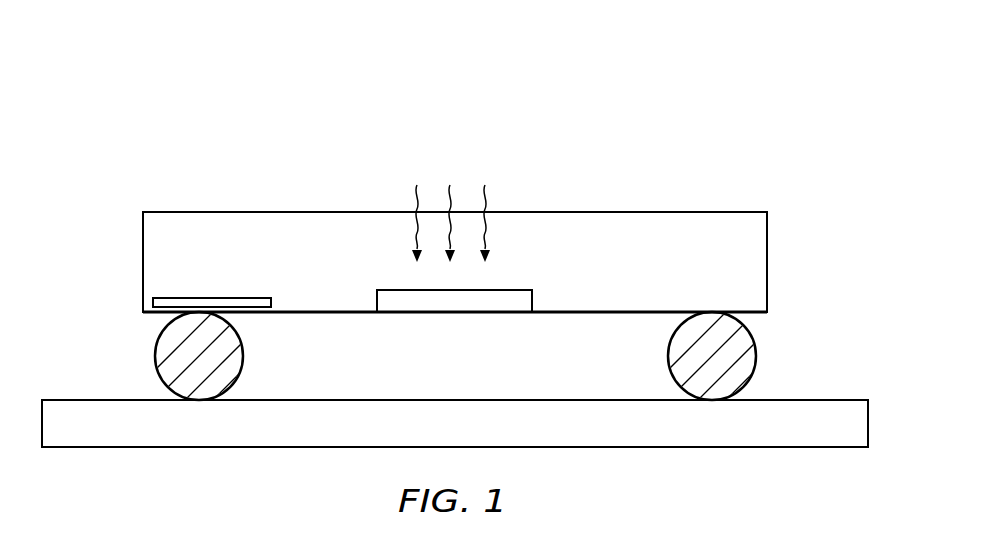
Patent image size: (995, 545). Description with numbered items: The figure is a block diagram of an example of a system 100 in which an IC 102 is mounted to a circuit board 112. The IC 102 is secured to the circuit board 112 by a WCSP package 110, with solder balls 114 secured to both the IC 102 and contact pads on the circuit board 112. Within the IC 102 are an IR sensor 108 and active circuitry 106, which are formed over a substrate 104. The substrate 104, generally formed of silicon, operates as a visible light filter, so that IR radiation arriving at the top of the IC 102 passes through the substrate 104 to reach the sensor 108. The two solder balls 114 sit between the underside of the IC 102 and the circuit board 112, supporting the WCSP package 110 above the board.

The system 100 is at (204, 63).
The IC 102 is at (649, 190).
The substrate 104 is at (313, 218).
The active circuitry 106 is at (158, 297).
The IR sensor 108 is at (473, 312).
The WCSP package 110 is at (778, 354).
The circuit board 112 is at (672, 447).
The solder balls 114 is at (153, 357).